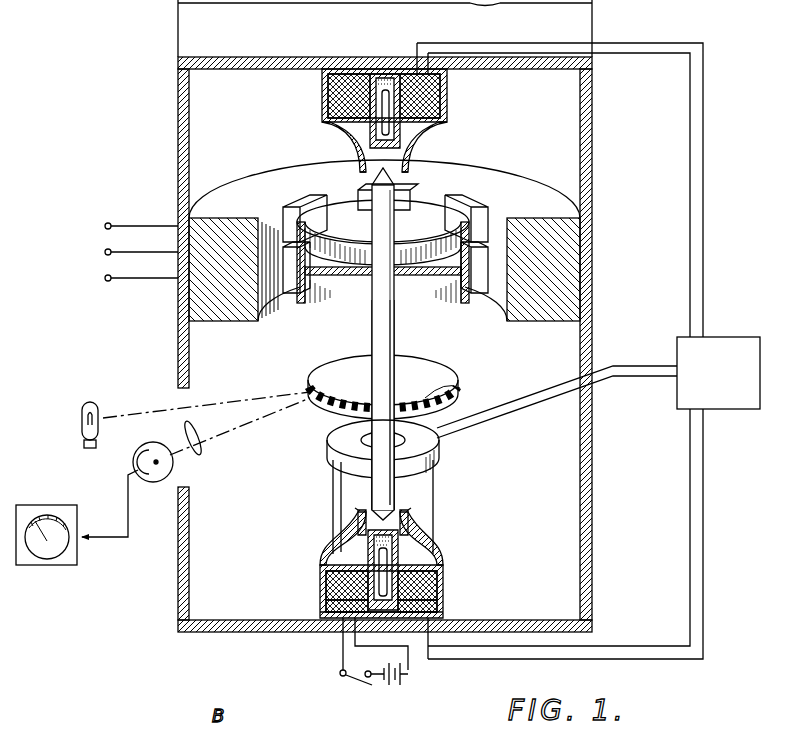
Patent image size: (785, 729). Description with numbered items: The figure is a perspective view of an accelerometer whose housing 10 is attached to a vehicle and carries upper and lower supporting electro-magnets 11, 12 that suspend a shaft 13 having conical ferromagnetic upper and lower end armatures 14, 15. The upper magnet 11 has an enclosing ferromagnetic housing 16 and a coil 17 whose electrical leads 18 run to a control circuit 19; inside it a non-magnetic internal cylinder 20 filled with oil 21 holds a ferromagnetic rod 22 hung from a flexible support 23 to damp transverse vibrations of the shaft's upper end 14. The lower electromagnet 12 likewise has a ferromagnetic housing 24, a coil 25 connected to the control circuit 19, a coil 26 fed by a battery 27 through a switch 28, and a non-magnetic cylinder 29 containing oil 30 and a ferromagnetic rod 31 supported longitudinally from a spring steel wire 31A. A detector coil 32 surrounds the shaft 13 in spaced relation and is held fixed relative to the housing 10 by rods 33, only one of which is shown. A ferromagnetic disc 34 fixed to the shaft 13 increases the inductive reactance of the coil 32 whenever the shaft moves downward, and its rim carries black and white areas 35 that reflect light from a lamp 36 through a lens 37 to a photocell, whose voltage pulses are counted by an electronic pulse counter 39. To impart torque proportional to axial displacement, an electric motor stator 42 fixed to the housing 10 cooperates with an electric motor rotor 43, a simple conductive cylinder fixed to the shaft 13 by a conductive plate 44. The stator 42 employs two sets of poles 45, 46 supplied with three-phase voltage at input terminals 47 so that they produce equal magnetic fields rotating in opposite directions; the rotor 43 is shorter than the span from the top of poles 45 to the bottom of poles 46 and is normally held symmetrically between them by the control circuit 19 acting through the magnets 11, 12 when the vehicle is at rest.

The housing 10 is at (594, 430).
The upper supporting electro-magnet 11 is at (322, 88).
The lower supporting electro-magnet 12 is at (447, 578).
The shaft 13 is at (370, 340).
The upper end armature 14 is at (360, 164).
The lower end armature 15 is at (410, 518).
The ferromagnetic housing 16 is at (447, 88).
The coil 17 is at (430, 106).
The electrical leads 18 is at (664, 53).
The control circuit 19 is at (594, 498).
The non-magnetic internal cylinder 20 is at (362, 72).
The oil 21 is at (378, 80).
The ferromagnetic rod 22 is at (383, 113).
The flexible support 23 is at (415, 74).
The ferromagnetic housing 24 is at (439, 602).
The coil 25 is at (330, 583).
The coil 26 is at (330, 609).
The battery 27 is at (397, 690).
The switch 28 is at (350, 686).
The non-magnetic cylinder 29 is at (395, 548).
The oil 30 is at (360, 536).
The ferromagnetic rod 31 is at (397, 568).
The spring steel wire 31A is at (390, 612).
The detector coil 32 is at (440, 450).
The rods 33 is at (332, 477).
The disc 34 is at (442, 370).
The black and white areas 35 is at (423, 402).
The lamp 36 is at (98, 393).
The lens 37 is at (206, 458).
The electronic pulse counter 39 is at (48, 505).
The electric motor stator 42 is at (514, 170).
The electric motor rotor 43 is at (452, 278).
The conductive plate 44 is at (333, 278).
The set of poles 45 is at (290, 203).
The set of poles 46 is at (291, 294).
The input terminals 47 is at (105, 277).